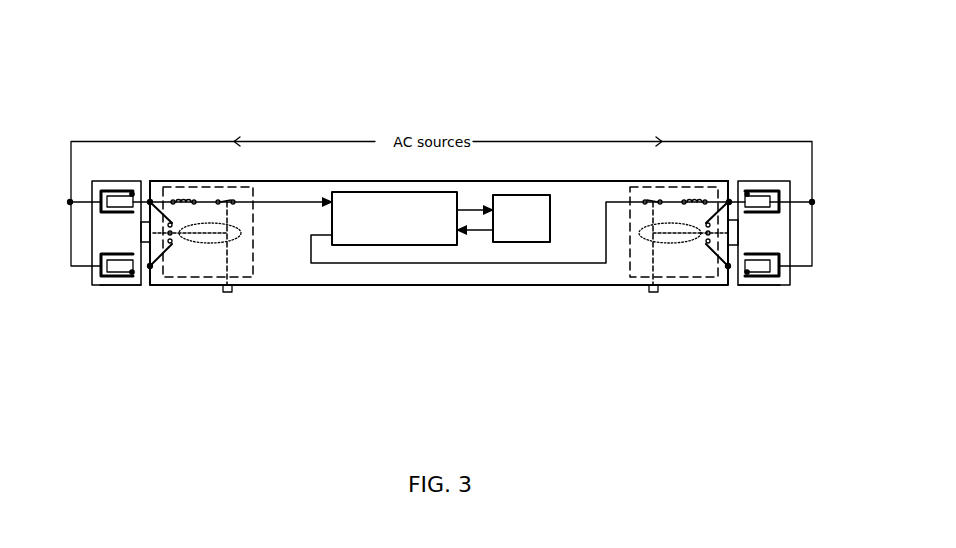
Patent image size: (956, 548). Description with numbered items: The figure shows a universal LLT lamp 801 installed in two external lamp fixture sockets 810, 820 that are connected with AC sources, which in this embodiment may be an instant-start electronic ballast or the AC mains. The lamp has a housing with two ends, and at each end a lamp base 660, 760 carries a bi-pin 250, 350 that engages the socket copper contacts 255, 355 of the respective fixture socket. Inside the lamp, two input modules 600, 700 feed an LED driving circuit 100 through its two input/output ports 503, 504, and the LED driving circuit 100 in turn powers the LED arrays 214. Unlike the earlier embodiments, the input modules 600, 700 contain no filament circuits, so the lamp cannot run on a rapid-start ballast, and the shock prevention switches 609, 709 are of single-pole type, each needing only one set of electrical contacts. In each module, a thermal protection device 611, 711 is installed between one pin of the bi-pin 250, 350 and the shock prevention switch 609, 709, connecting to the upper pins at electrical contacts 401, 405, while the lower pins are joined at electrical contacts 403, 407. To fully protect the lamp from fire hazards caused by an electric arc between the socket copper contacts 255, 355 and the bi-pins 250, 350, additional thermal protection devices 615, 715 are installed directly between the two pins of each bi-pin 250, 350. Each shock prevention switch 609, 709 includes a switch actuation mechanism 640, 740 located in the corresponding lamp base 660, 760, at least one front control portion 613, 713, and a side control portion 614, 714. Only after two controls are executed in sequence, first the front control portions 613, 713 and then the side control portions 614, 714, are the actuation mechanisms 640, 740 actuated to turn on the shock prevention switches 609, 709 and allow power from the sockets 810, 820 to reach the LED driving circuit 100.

The LED driving circuit 100 is at (427, 245).
The LED arrays 214 is at (537, 242).
The bi-pin 250 is at (113, 200).
The socket copper contact 255 is at (131, 194).
The bi-pin 350 is at (763, 200).
The socket copper contact 355 is at (748, 194).
The electrical contact 401 is at (149, 200).
The electrical contact 403 is at (150, 267).
The electrical contact 405 is at (732, 200).
The electrical contact 407 is at (728, 267).
The input/output port 503 is at (303, 201).
The input/output port 504 is at (338, 265).
The input module 600 is at (240, 181).
The shock prevention switch 609 is at (222, 200).
The thermal protection device 611 is at (187, 200).
The front control portion 613 is at (141, 242).
The side control portion 614 is at (228, 292).
The thermal protection device 615 is at (172, 242).
The actuation mechanism 640 is at (233, 242).
The lamp base 660 is at (168, 180).
The input module 700 is at (641, 180).
The shock prevention switch 709 is at (657, 200).
The thermal protection device 711 is at (692, 200).
The front control portion 713 is at (739, 243).
The side control portion 714 is at (653, 293).
The thermal protection device 715 is at (706, 242).
The actuation mechanism 740 is at (648, 240).
The lamp base 760 is at (719, 180).
The universal LLT lamp 801 is at (510, 178).
The lamp fixture socket 810 is at (125, 288).
The lamp fixture socket 820 is at (750, 288).